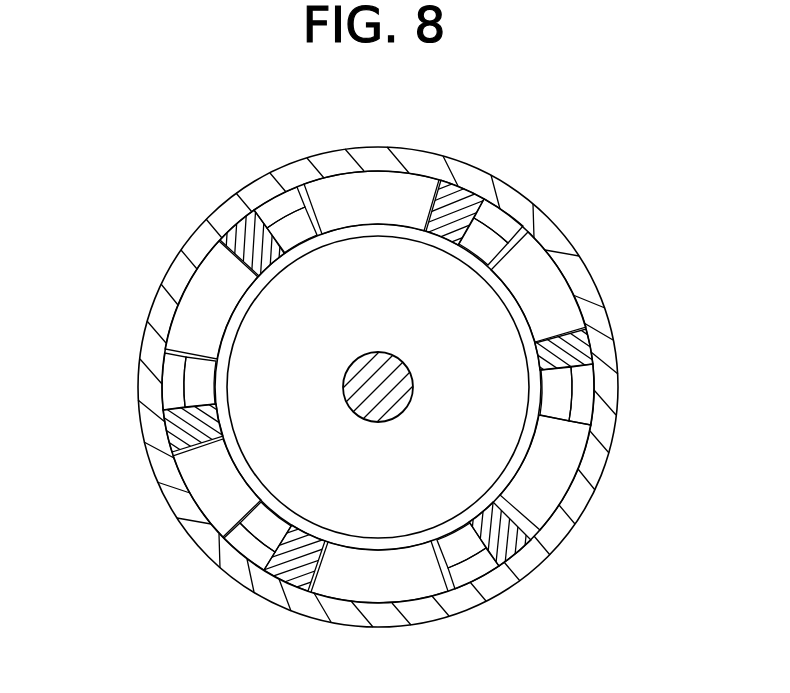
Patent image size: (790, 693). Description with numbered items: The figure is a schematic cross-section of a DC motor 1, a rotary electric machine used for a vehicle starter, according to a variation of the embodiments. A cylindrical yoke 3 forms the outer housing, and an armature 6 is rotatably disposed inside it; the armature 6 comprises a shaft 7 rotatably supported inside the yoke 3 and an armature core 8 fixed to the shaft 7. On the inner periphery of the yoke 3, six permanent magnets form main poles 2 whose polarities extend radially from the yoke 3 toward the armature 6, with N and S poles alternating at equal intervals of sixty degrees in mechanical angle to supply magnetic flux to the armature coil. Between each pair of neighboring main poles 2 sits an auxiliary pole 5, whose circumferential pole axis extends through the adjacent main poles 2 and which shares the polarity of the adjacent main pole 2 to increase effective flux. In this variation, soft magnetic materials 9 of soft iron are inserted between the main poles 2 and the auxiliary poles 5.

The DC motor 1 is at (118, 143).
The main pole 2 is at (297, 220).
The yoke 3 is at (342, 163).
The auxiliary pole 5 is at (491, 227).
The armature 6 is at (256, 485).
The shaft 7 is at (352, 393).
The armature core 8 is at (265, 338).
The soft magnetic material 9 is at (467, 195).